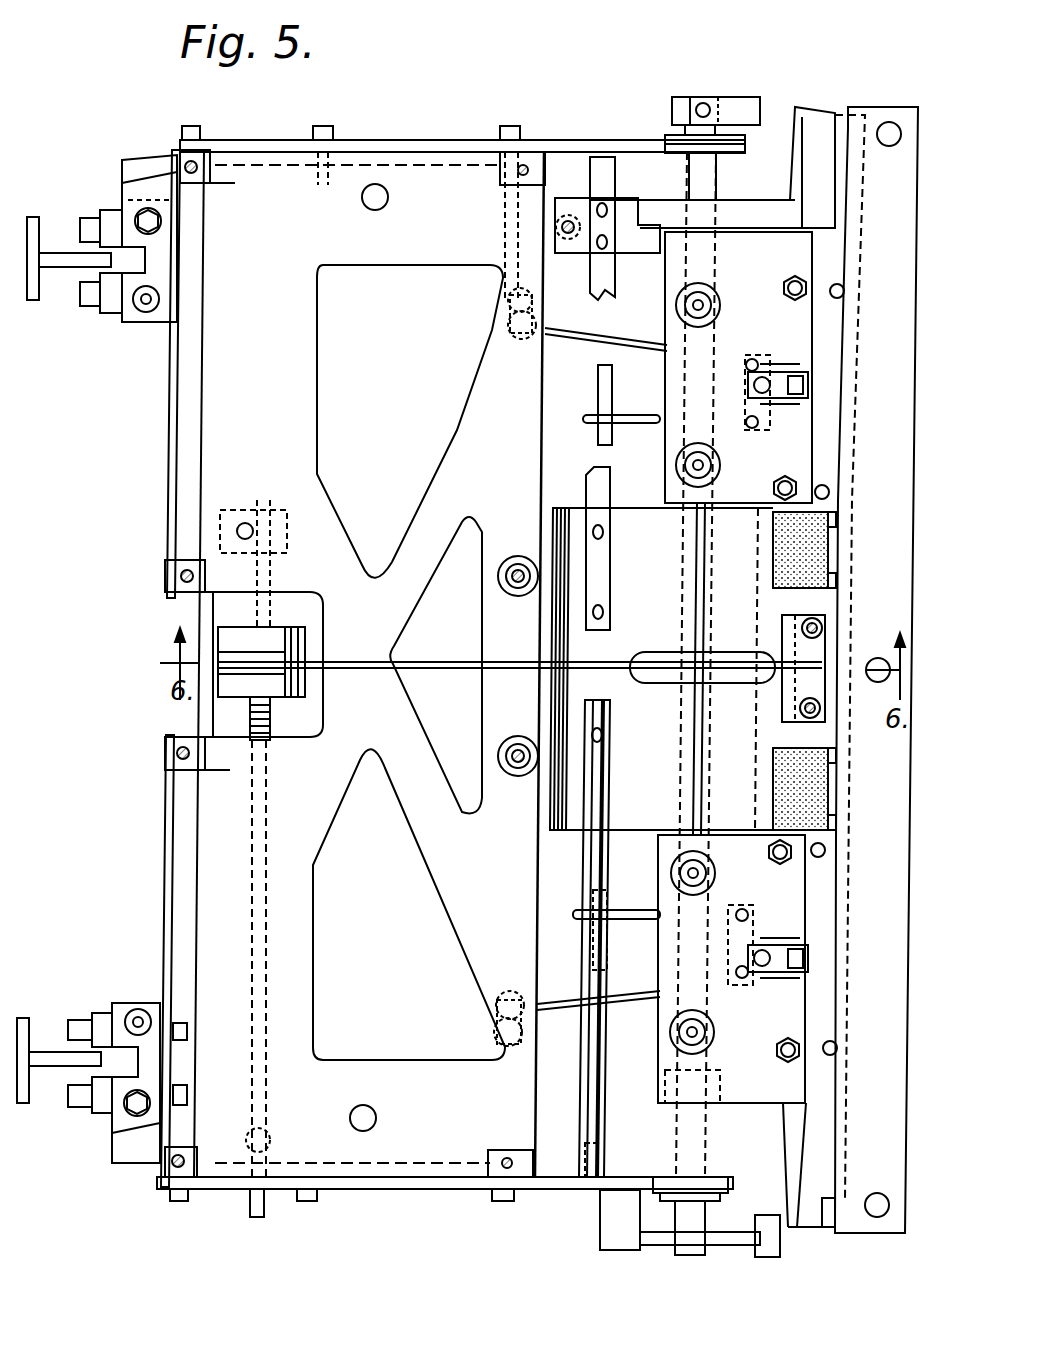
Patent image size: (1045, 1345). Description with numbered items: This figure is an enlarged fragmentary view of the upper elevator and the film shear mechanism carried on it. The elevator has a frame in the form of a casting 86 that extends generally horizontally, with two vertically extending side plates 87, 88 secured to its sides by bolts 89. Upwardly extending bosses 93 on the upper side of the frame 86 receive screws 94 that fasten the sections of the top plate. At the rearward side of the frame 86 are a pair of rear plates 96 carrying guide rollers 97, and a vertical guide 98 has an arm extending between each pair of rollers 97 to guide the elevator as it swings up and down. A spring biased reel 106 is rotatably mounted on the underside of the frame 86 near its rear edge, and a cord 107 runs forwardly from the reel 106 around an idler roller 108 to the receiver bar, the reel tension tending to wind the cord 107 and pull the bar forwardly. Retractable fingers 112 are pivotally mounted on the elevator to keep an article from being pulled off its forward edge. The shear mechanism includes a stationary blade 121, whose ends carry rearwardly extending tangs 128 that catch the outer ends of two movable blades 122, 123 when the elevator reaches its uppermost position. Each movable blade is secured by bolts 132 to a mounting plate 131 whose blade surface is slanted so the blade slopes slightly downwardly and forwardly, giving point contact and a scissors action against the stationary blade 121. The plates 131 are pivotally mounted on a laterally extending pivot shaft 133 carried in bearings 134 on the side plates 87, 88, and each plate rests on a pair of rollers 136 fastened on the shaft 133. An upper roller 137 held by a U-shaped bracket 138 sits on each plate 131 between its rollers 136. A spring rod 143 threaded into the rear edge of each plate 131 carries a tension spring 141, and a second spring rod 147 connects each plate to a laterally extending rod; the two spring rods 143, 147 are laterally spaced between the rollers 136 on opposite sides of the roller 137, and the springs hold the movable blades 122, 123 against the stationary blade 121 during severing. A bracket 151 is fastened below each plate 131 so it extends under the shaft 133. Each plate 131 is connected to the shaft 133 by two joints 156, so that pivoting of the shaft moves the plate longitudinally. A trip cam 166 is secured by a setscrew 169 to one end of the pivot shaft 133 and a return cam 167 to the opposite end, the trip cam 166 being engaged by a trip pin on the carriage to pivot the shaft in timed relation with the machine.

The frame 86 is at (268, 370).
The side plate 87 is at (408, 1189).
The side plate 88 is at (414, 140).
The bolts 89 is at (323, 126).
The bosses 93 is at (198, 188).
The screws 94 is at (188, 1201).
The rear plates 96 is at (168, 440).
The guide rollers 97 is at (108, 215).
The vertical guide 98 is at (33, 300).
The spring biased reel 106 is at (306, 640).
The cord 107 is at (380, 670).
The idler roller 108 is at (822, 670).
The retractable fingers 112 is at (836, 520).
The stationary blade 121 is at (895, 450).
The movable blade 122 is at (792, 120).
The movable blade 123 is at (780, 1128).
The tangs 128 is at (840, 112).
The mounting plate 131 is at (765, 300).
The bolts 132 is at (808, 290).
The pivot shaft 133 is at (690, 170).
The bearings 134 is at (722, 160).
The rollers 136 is at (650, 258).
The upper roller 137 is at (808, 386).
The U-shaped bracket 138 is at (800, 365).
The tension spring 141 is at (500, 1018).
The spring rod 143 is at (548, 335).
The second spring rod 147 is at (585, 420).
The bracket 151 is at (652, 902).
The joints 156 is at (695, 440).
The trip cam 166 is at (728, 97).
The return cam 167 is at (730, 1225).
The setscrew 169 is at (700, 105).